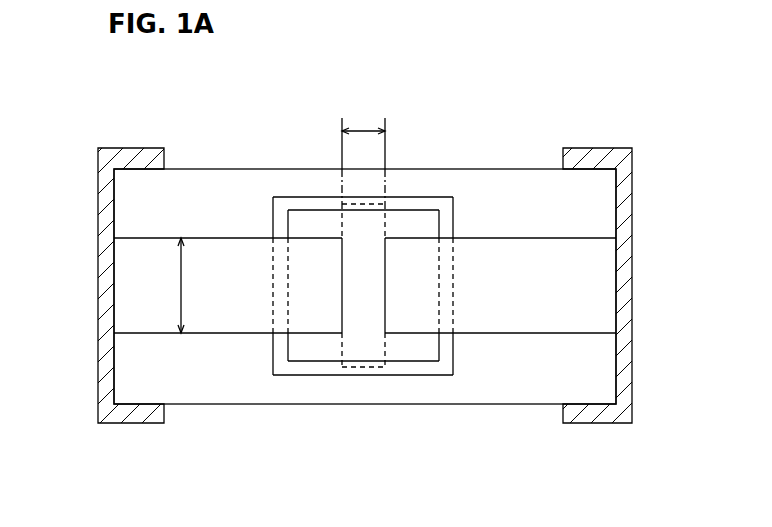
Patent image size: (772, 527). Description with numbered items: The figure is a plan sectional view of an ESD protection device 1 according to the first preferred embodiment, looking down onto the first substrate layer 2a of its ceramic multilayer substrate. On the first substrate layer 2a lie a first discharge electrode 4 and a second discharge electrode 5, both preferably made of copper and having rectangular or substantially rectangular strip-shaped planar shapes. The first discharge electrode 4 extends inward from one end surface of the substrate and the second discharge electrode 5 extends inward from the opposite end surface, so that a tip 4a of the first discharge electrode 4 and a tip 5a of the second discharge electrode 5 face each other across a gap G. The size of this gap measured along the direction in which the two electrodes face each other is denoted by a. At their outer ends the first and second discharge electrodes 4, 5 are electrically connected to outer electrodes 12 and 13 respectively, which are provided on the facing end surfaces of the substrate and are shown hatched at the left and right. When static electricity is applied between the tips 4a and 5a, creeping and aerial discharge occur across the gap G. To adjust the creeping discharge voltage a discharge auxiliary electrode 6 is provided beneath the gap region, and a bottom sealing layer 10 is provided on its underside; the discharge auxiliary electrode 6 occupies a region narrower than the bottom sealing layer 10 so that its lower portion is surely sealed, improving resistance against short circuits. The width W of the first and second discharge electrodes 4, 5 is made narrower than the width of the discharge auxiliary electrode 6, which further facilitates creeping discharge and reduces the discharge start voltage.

The ESD protection device 1 is at (130, 134).
The first substrate layer 2a is at (182, 383).
The first discharge electrode 4 is at (234, 266).
The tip of the first discharge electrode 4a is at (342, 273).
The second discharge electrode 5 is at (492, 264).
The tip of the second discharge electrode 5a is at (385, 273).
The discharge auxiliary electrode 6 is at (408, 210).
The bottom sealing layer 10 is at (287, 197).
The outer electrode 12 is at (97, 348).
The outer electrode 13 is at (632, 345).
The gap G is at (362, 323).
The width of the first and second discharge electrodes W is at (194, 285).
The size of the gap a is at (363, 138).